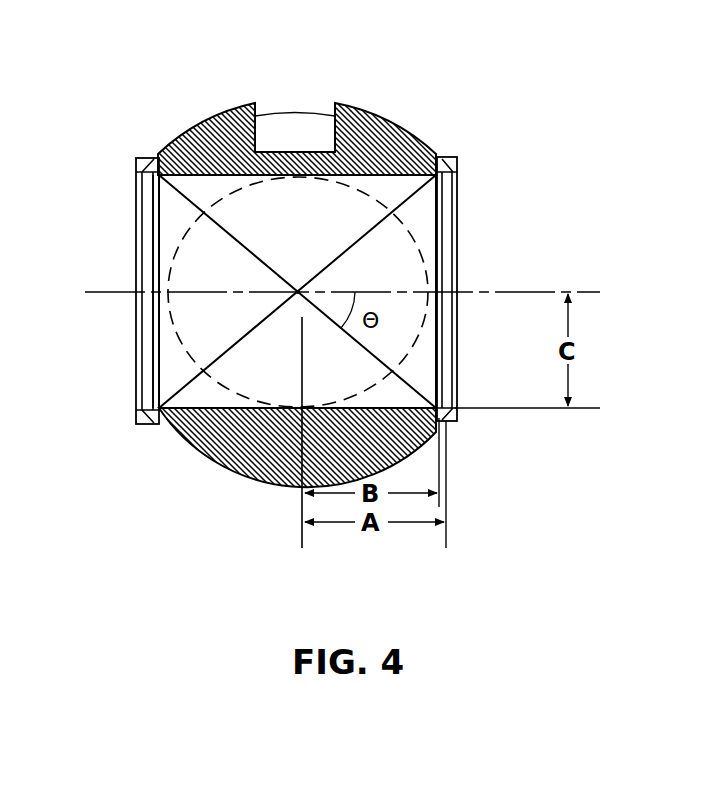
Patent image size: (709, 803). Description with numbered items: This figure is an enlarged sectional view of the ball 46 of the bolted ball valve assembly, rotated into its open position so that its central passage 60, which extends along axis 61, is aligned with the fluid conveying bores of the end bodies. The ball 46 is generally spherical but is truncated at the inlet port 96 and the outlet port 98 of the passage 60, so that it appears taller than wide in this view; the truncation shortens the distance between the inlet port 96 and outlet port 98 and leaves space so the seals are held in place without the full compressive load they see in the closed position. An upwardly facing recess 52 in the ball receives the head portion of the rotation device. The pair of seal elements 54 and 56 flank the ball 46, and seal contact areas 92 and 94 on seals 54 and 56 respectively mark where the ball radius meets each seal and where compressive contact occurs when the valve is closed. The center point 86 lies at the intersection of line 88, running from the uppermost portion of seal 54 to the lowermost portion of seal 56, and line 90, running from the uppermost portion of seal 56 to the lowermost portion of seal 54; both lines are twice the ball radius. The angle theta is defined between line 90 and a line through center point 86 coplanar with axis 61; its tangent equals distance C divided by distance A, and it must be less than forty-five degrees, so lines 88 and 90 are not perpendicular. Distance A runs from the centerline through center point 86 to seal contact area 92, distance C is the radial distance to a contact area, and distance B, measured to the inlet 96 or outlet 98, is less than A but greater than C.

The ball 46 is at (380, 131).
The recess 52 is at (298, 131).
The seal element 54 is at (458, 165).
The seal element 56 is at (136, 160).
The passage 60 is at (428, 365).
The axis 61 is at (95, 293).
The center point 86 is at (299, 289).
The line 88 is at (230, 348).
The line 90 is at (228, 229).
The seal contact area 92 is at (446, 158).
The seal contact area 94 is at (150, 172).
The inlet port 96 is at (437, 222).
The outlet port 98 is at (153, 263).